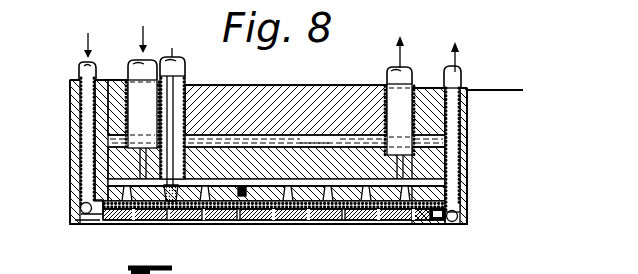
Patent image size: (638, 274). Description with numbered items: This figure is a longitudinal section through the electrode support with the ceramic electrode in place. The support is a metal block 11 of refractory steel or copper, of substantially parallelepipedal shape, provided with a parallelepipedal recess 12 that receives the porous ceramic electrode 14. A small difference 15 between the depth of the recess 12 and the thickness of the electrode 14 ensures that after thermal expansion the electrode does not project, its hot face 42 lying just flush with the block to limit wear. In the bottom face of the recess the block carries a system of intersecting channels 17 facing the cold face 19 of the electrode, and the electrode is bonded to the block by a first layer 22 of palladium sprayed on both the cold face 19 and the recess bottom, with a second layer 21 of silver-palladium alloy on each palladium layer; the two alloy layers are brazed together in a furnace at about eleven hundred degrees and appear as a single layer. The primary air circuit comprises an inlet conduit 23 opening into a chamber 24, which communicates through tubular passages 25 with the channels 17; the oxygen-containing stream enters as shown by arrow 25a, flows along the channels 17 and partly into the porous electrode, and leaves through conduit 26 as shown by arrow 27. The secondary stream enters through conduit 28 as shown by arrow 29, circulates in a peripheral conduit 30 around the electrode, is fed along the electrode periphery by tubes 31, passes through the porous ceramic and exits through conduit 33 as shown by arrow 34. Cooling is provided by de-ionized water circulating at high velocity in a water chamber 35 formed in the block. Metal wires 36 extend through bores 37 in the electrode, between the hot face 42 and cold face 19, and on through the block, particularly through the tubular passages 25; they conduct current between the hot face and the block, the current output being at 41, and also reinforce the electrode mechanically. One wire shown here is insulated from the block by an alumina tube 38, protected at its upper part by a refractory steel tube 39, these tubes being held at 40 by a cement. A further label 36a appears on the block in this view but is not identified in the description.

The metal block 11 is at (466, 152).
The recess 12 is at (414, 225).
The electrode 14 is at (293, 208).
The small difference 15 is at (313, 203).
The channels 17 is at (375, 203).
The cold face 19 is at (267, 202).
The second layer 21 is at (456, 211).
The first layer 22 is at (432, 214).
The inlet conduit 23 is at (130, 78).
The chamber 24 is at (110, 172).
The tubular passages 25 is at (241, 188).
The arrow 25a is at (146, 36).
The conduit 26 is at (406, 68).
The arrow 27 is at (401, 56).
The conduit 28 is at (78, 68).
The arrow 29 is at (88, 33).
The peripheral conduit 30 is at (78, 207).
The tubes 31 is at (97, 219).
The conduit 33 is at (468, 118).
The arrow 34 is at (457, 62).
The water chamber 35 is at (315, 133).
The metal wires 36 is at (218, 208).
The top block 36a is at (205, 86).
The bores 37 is at (200, 220).
The alumina tube 38 is at (172, 176).
The refractory steel tube 39 is at (185, 68).
The cement holding point 40 is at (170, 192).
The current output 41 is at (505, 90).
The hot face 42 is at (343, 210).